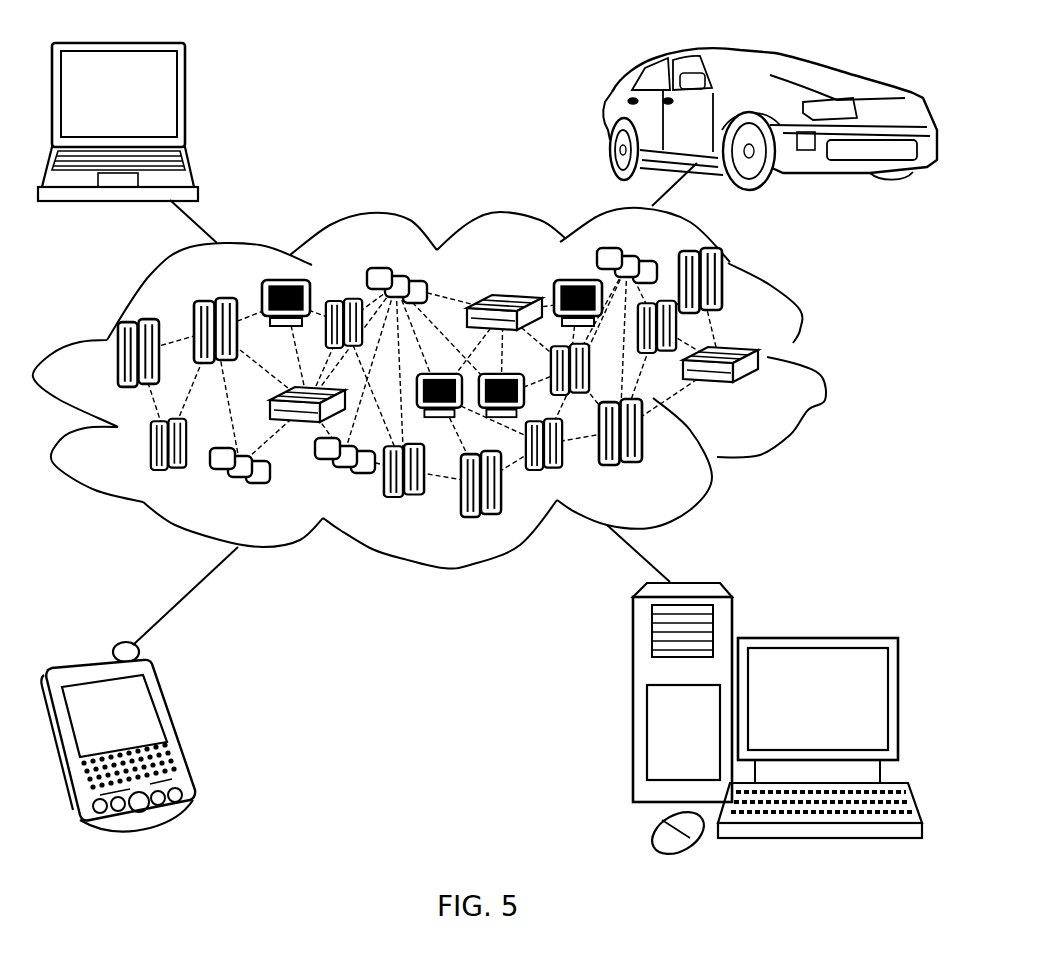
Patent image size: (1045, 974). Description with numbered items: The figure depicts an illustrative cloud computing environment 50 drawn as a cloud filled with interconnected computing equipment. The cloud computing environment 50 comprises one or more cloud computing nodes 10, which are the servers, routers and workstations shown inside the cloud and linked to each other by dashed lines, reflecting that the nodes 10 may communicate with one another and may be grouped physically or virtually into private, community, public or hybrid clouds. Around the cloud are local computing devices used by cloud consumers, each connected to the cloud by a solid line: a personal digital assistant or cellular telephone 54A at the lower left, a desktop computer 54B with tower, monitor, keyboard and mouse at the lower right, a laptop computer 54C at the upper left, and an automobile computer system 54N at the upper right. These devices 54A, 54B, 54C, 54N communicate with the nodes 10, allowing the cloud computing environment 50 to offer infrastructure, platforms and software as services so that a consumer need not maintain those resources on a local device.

The cloud computing node 10 is at (765, 391).
The cloud computing environment 50 is at (818, 364).
The personal digital assistant or cellular telephone 54A is at (168, 728).
The desktop computer 54B is at (814, 637).
The laptop computer 54C is at (189, 104).
The automobile computer system 54N is at (608, 118).